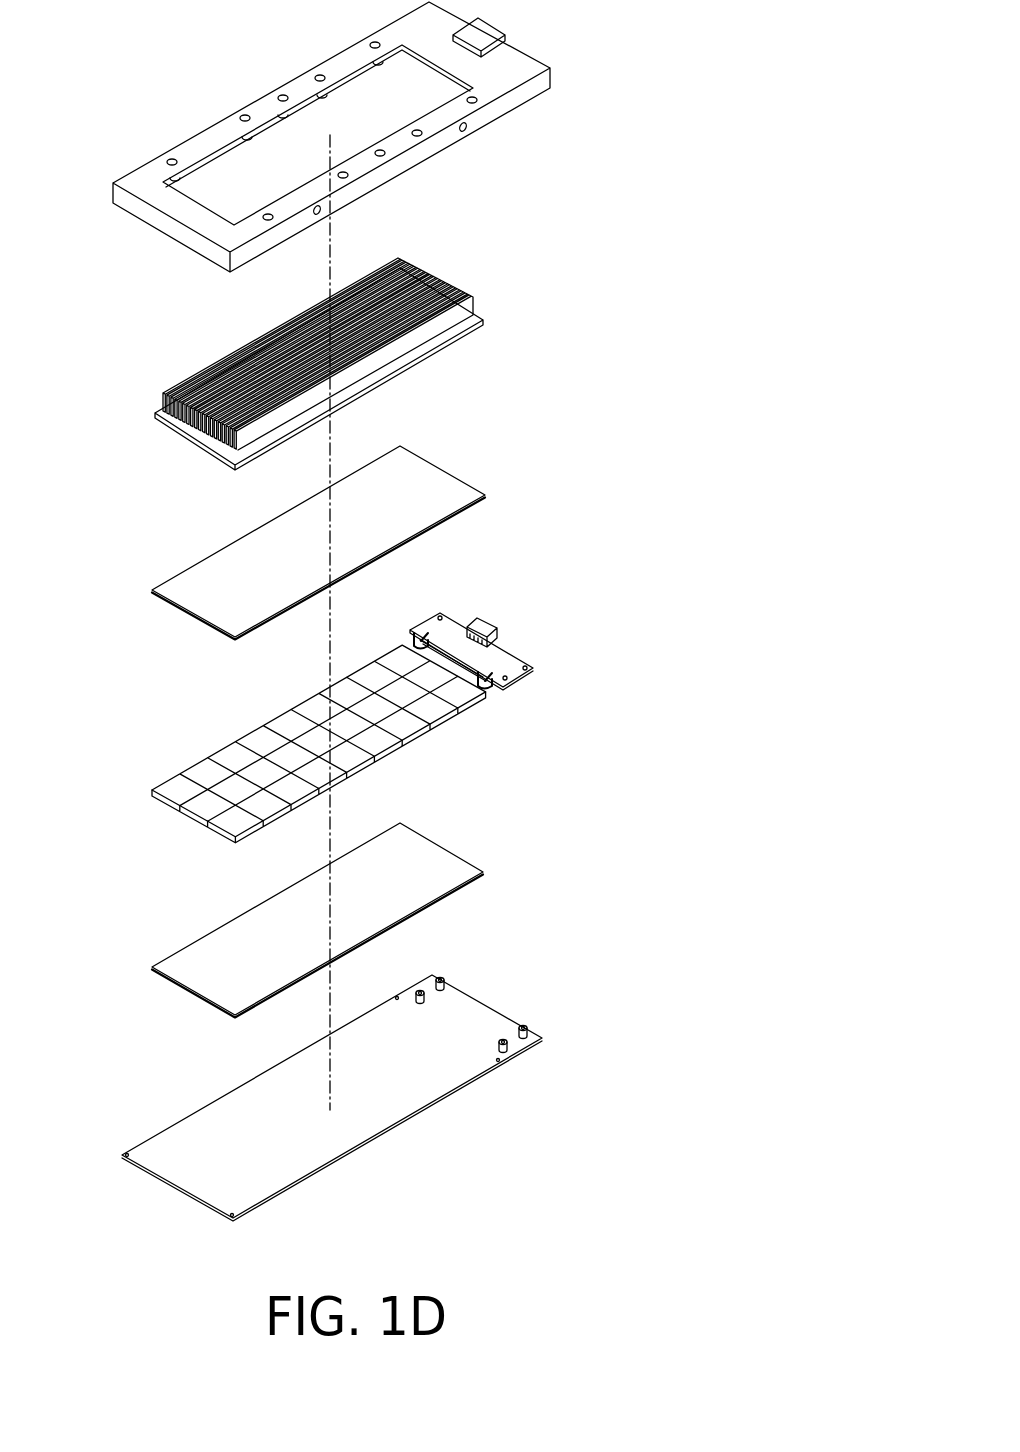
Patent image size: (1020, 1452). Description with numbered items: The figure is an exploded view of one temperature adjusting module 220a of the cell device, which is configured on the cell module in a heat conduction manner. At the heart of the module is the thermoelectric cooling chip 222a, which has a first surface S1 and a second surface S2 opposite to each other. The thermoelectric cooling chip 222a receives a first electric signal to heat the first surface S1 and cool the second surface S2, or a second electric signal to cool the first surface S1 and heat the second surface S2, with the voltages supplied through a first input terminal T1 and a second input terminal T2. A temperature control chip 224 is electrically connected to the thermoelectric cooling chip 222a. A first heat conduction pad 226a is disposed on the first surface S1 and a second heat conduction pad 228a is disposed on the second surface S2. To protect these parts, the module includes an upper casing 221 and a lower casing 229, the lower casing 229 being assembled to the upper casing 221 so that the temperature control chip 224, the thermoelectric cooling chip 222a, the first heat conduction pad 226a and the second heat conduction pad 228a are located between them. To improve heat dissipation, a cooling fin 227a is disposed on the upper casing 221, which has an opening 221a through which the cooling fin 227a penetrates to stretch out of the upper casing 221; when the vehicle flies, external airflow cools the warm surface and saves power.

The temperature adjusting module 220a is at (373, 620).
The upper casing 221 is at (373, 137).
The opening 221a is at (432, 77).
The cooling fin 227a is at (430, 335).
The second heat conduction pad 228a is at (437, 508).
The temperature control chip 224 is at (477, 663).
The first input terminal T1 is at (497, 688).
The second input terminal T2 is at (406, 634).
The thermoelectric cooling chip 222a is at (338, 764).
The first surface S1 is at (310, 812).
The second surface S2 is at (262, 736).
The first heat conduction pad 226a is at (440, 862).
The lower casing 229 is at (472, 1020).